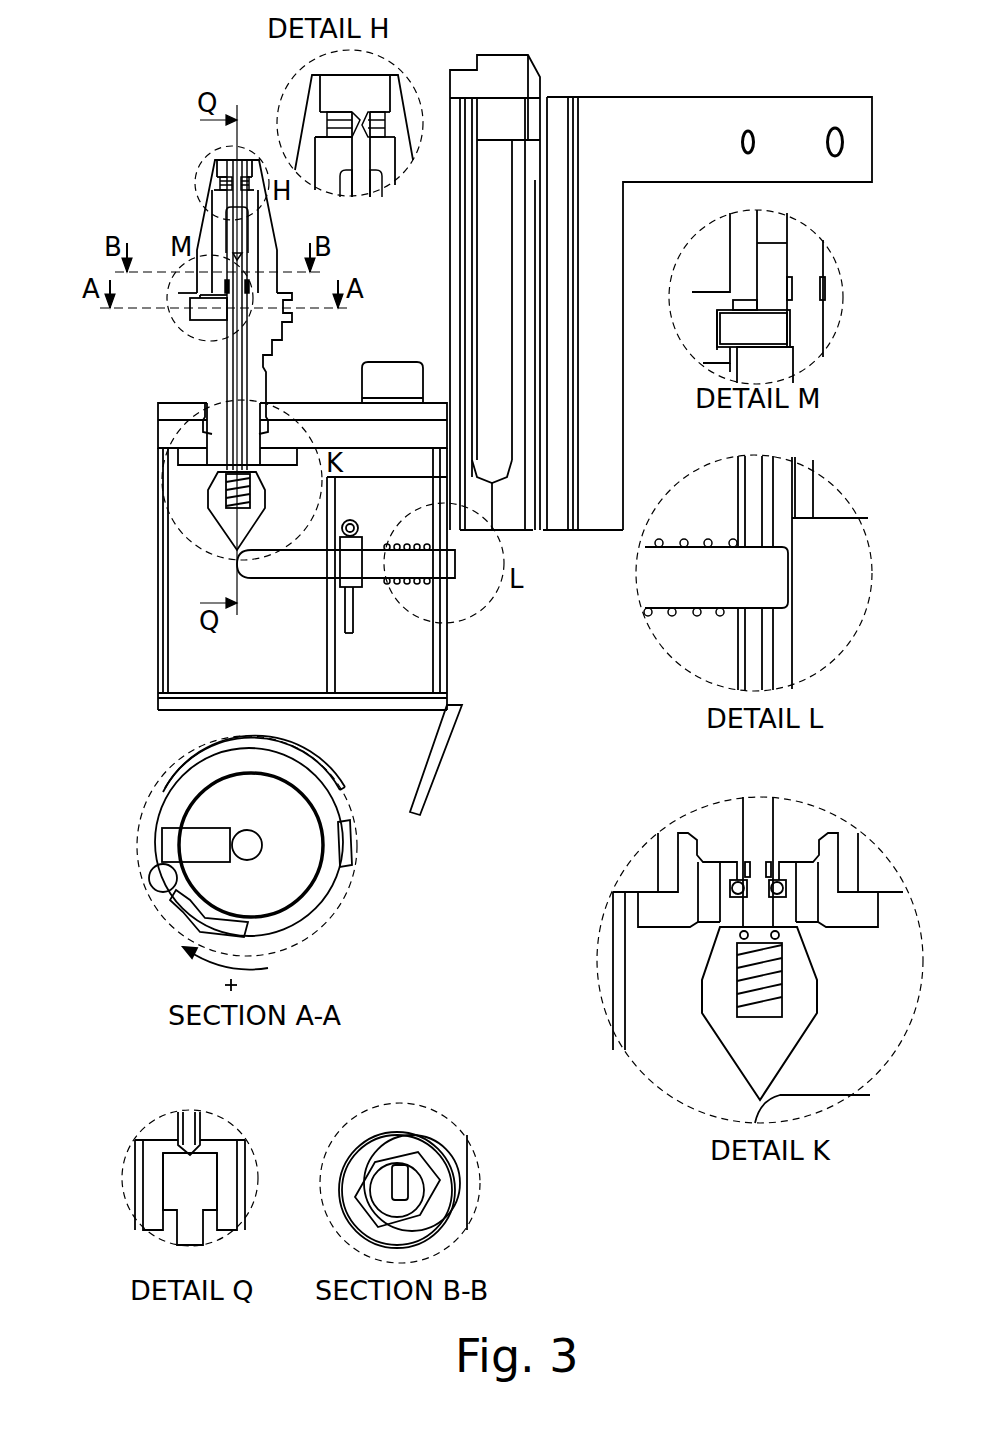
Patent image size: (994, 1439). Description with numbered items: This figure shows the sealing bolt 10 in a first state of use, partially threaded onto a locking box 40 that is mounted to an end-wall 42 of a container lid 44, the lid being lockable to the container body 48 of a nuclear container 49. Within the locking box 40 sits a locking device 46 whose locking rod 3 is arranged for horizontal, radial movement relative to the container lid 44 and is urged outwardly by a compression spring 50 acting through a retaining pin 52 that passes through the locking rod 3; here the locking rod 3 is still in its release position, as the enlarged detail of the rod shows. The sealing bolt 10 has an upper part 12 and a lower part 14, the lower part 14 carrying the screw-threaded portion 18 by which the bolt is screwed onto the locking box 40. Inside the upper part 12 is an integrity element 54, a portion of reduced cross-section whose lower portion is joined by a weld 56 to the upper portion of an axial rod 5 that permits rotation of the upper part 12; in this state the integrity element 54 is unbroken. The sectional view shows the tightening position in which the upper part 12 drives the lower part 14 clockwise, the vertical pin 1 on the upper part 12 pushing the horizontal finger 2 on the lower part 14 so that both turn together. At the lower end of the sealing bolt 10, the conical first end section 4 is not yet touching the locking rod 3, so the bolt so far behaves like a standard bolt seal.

The vertical pin 1 is at (157, 880).
The horizontal finger 2 is at (170, 842).
The locking rod 3 is at (282, 568).
The conical first end section 4 is at (203, 500).
The axial rod 5 is at (248, 236).
The sealing bolt 10 is at (148, 100).
The upper part 12 is at (210, 220).
The lower part 14 is at (280, 350).
The screw-threaded portion 18 is at (205, 385).
The locking box 40 is at (158, 630).
The end-wall 42 is at (165, 432).
The container lid 44 is at (442, 398).
The locking device 46 is at (308, 616).
The container body 48 is at (520, 515).
The nuclear container 49 is at (740, 75).
The compression spring 50 is at (380, 583).
The retaining pin 52 is at (362, 520).
The integrity element 54 is at (218, 182).
The weld 56 is at (358, 187).